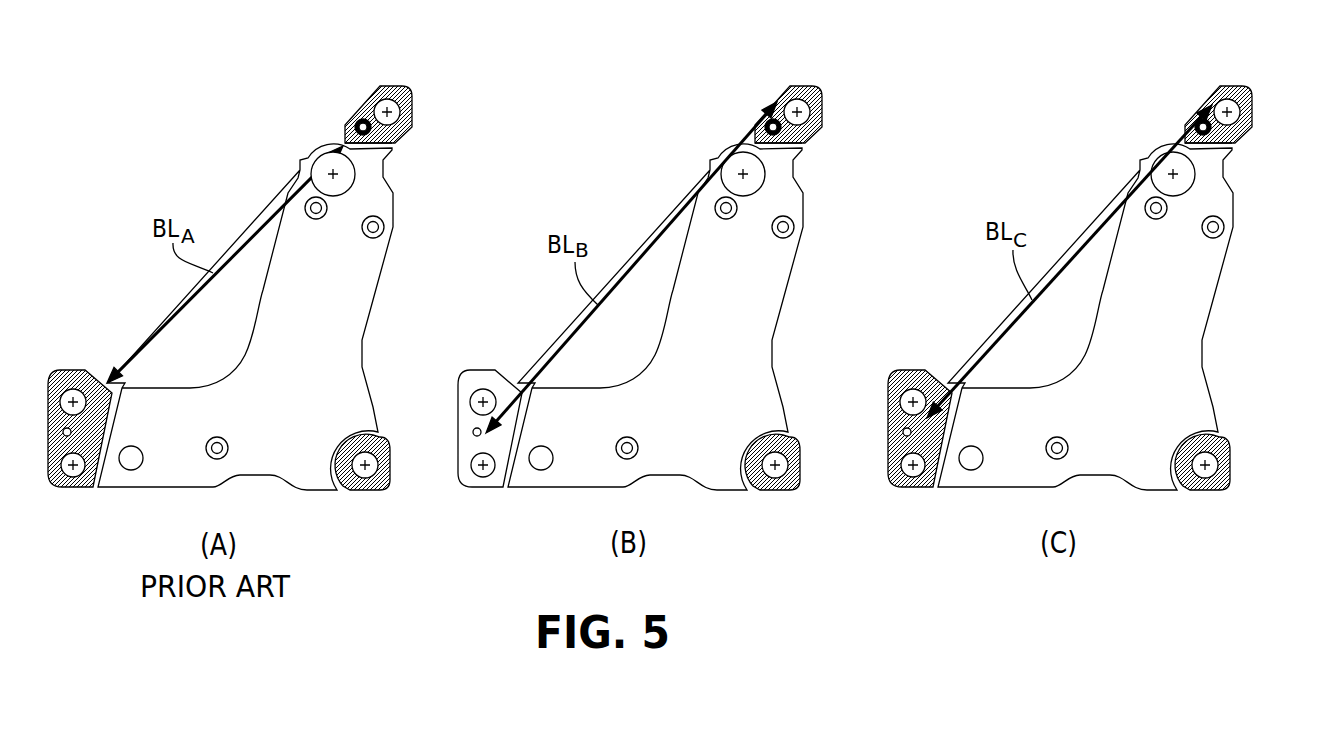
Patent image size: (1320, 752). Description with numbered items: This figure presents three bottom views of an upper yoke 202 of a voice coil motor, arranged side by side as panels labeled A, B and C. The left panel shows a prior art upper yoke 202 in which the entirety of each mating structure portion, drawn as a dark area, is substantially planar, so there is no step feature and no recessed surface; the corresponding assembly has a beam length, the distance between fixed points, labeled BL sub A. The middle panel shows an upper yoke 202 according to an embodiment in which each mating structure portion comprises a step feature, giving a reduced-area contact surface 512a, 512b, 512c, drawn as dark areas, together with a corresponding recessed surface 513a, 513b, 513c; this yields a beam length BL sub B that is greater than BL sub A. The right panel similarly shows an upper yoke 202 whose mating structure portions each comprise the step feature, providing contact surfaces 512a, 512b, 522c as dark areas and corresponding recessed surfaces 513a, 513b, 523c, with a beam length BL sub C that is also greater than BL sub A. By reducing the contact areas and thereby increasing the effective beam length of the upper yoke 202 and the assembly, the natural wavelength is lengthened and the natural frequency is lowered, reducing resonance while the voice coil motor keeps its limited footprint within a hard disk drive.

The upper yoke 202 is at (307, 383).
The contact surface 512a is at (820, 92).
The recessed surface 513a is at (797, 130).
The contact surface 512b is at (772, 490).
The recessed surface 513b is at (773, 447).
The contact surface 512c is at (462, 410).
The recessed surface 513c is at (492, 442).
The contact surface 522c is at (888, 482).
The recessed surface 523c is at (932, 390).